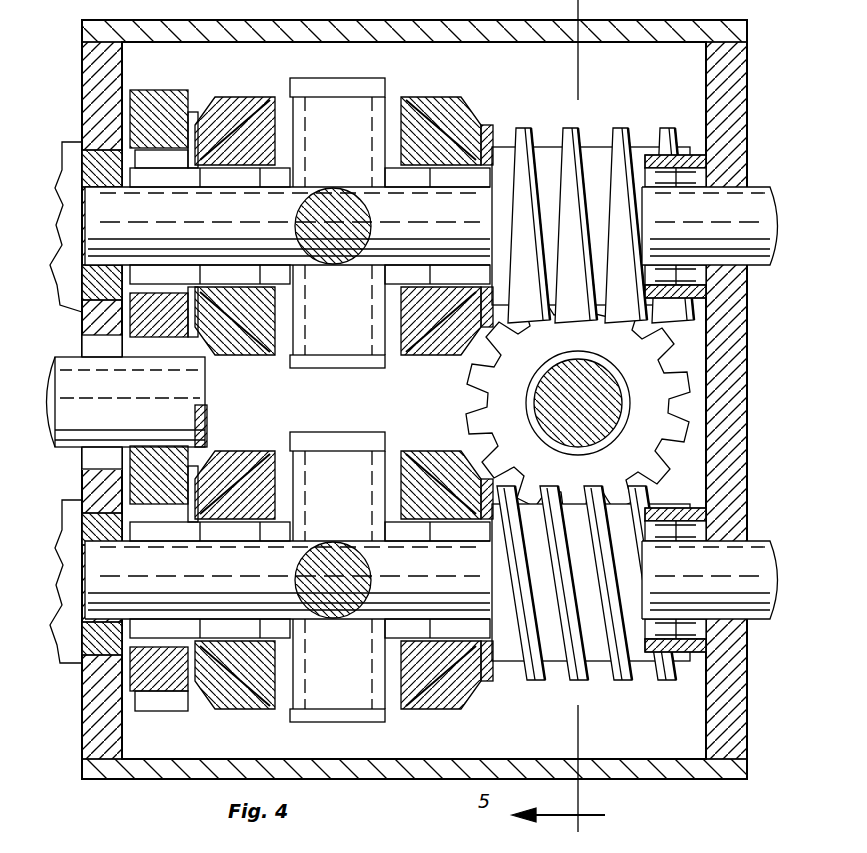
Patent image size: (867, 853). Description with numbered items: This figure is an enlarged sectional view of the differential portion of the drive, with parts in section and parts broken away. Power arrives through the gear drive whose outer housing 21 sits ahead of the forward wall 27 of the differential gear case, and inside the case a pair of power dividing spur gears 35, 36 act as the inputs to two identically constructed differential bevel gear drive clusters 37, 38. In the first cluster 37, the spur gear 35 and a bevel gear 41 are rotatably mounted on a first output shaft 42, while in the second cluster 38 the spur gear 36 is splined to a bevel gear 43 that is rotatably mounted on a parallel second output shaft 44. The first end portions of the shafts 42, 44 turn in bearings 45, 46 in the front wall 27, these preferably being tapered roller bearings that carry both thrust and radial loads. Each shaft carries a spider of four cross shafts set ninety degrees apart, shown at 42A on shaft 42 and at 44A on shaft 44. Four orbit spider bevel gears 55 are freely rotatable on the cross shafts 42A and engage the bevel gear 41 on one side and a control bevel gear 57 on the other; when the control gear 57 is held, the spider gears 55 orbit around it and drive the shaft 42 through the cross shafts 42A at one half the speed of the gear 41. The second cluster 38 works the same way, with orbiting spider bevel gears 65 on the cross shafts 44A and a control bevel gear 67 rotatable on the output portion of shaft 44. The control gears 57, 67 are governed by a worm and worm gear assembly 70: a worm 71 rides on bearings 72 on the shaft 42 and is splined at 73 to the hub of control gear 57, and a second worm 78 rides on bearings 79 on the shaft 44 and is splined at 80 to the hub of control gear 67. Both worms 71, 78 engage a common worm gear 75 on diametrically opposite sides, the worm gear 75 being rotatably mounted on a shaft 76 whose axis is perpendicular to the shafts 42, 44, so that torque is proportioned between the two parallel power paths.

The outer housing 21 is at (70, 358).
The forward wall 27 is at (85, 742).
The power dividing spur gear 35 is at (132, 680).
The power dividing spur gear 36 is at (162, 116).
The differential bevel gear drive cluster 37 is at (336, 724).
The differential bevel gear drive cluster 38 is at (430, 92).
The bevel gear 41 is at (222, 470).
The first output shaft 42 is at (762, 566).
The cross shafts 42A is at (355, 436).
The bevel gear 43 is at (195, 128).
The second output shaft 44 is at (762, 208).
The cross shafts 44A is at (338, 78).
The bearing 45 is at (82, 520).
The bearing 46 is at (82, 160).
The orbit spider bevel gears 55 is at (258, 456).
The control bevel gear 57 is at (485, 685).
The orbiting spider bevel gears 65 is at (246, 125).
The control bevel gear 67 is at (476, 134).
The worm and worm gear assembly 70 is at (627, 403).
The worm 71 is at (634, 684).
The bearings 72 is at (675, 530).
The spline 73 is at (482, 490).
The worm gear 75 is at (655, 374).
The shaft 76 is at (620, 400).
The second worm 78 is at (618, 128).
The bearings 79 is at (702, 170).
The spline 80 is at (493, 145).